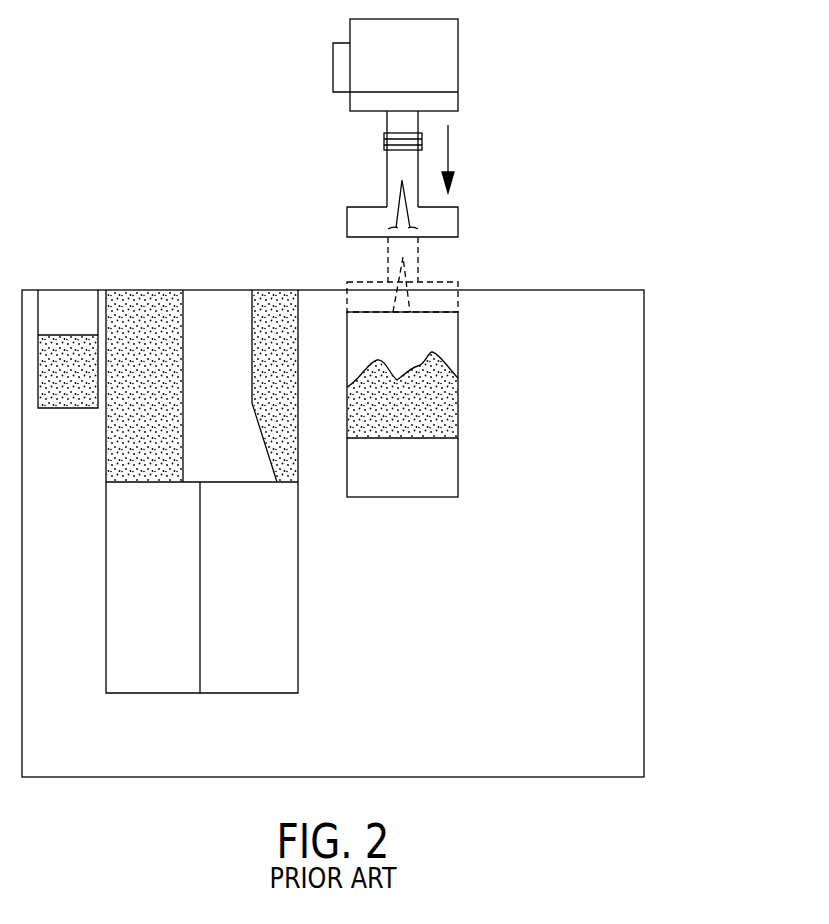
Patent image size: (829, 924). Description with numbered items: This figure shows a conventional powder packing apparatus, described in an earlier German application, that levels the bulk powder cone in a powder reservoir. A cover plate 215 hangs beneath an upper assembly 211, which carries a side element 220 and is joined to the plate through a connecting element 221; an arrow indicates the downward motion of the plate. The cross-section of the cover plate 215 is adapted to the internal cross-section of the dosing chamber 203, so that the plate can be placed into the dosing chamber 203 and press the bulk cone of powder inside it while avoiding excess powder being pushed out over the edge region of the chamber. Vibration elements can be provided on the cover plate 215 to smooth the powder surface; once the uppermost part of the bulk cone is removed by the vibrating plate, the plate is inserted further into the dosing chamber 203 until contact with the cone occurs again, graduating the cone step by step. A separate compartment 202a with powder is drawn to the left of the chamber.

The powder supply container 202a is at (68, 300).
The dosing chamber 203 is at (445, 410).
The actuator housing 211 is at (450, 50).
The cover plate 215 is at (460, 220).
The side attachment of housing 220 is at (333, 60).
The coupling / spring element 221 is at (384, 145).